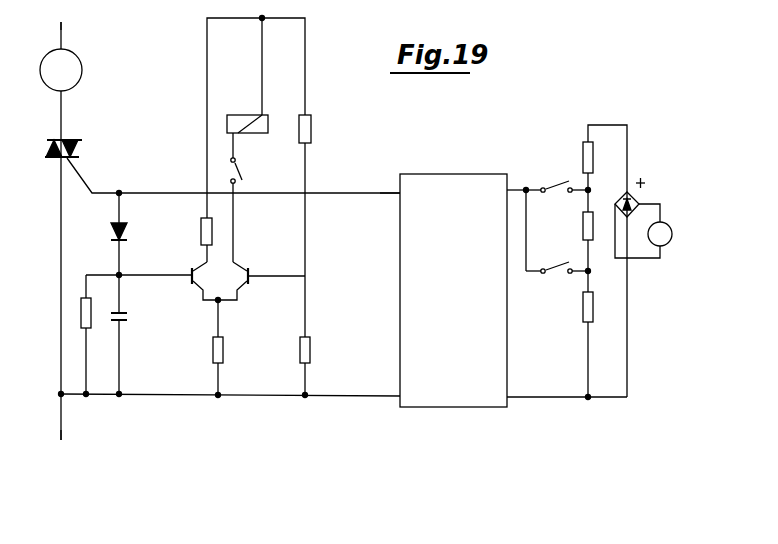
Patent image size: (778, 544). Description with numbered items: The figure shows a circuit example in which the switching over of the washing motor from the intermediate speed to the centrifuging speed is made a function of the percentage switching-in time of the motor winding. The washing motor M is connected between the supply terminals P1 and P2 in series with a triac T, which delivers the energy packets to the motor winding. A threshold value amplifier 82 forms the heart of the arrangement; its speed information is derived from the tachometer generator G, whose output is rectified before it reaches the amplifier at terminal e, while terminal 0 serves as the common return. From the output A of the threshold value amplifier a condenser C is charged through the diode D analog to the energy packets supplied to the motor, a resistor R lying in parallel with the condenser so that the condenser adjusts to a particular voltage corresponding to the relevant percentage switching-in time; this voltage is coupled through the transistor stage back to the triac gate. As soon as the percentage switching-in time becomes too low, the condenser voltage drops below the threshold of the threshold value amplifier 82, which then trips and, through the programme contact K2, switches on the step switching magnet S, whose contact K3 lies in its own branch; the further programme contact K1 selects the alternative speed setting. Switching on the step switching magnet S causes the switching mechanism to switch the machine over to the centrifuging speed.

The threshold value amplifier 82 is at (455, 407).
The supply terminal P1 is at (59, 16).
The supply terminal P2 is at (61, 445).
The motor M is at (61, 70).
The triac T is at (82, 166).
The diode D is at (126, 234).
The resistor R is at (78, 334).
The condenser C is at (126, 334).
The step switching magnet S is at (240, 117).
The relay contact K3 is at (248, 197).
The switch contact K1 is at (557, 197).
The programme contact K2 is at (564, 278).
The output of the threshold value amplifier A is at (389, 187).
The output terminal e is at (516, 182).
The ground terminal 0 is at (567, 389).
The tachometer generator G is at (643, 218).